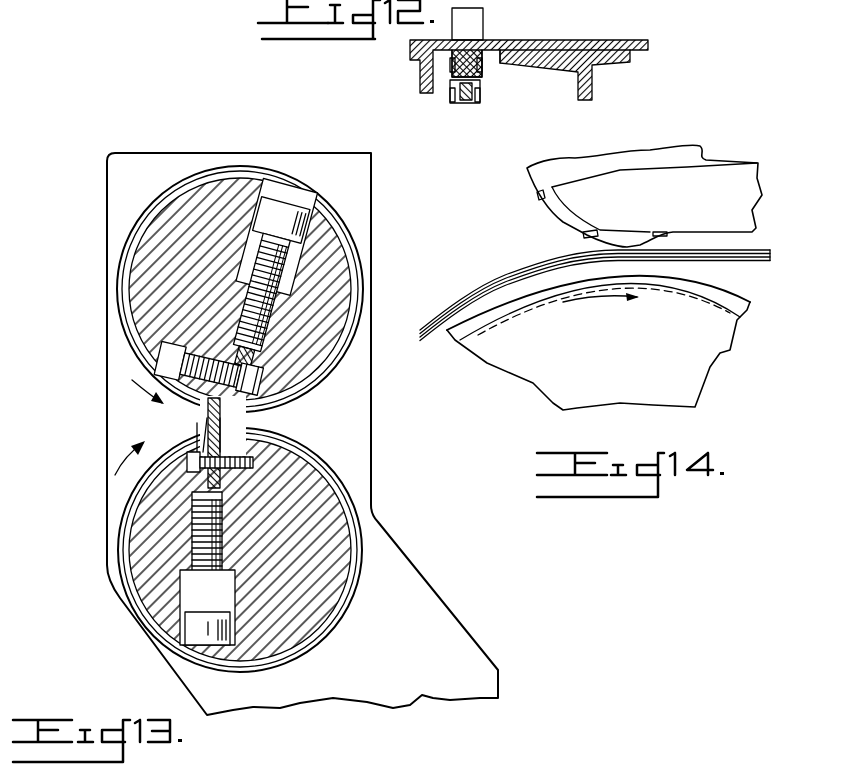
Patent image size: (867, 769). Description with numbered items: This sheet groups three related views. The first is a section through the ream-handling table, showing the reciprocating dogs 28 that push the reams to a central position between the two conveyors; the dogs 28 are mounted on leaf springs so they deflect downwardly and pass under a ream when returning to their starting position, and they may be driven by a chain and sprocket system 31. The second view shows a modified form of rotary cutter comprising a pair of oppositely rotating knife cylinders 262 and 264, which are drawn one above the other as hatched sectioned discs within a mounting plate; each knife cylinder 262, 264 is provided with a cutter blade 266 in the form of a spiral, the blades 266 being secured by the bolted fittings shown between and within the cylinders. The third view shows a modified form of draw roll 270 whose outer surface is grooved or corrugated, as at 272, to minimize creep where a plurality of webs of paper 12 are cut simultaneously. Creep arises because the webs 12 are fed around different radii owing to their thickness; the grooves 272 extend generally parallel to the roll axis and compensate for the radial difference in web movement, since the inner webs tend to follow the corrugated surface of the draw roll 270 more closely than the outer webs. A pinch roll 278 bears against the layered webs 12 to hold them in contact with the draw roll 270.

In FIG. 14, the webs of paper 12 is at (470, 302).
In FIG. 12, the reciprocating dogs 28 is at (484, 22).
In FIG. 12, the chain and sprocket system 31 is at (529, 51).
In FIG. 13, the knife cylinder 262 is at (337, 372).
In FIG. 13, the knife cylinder 264 is at (350, 595).
In FIG. 13, the cutter blade 266 is at (197, 424).
In FIG. 14, the draw roll 270 is at (709, 370).
In FIG. 14, the grooved or corrugated outer surface 272 is at (693, 284).
In FIG. 14, the pinch roll 278 is at (527, 176).